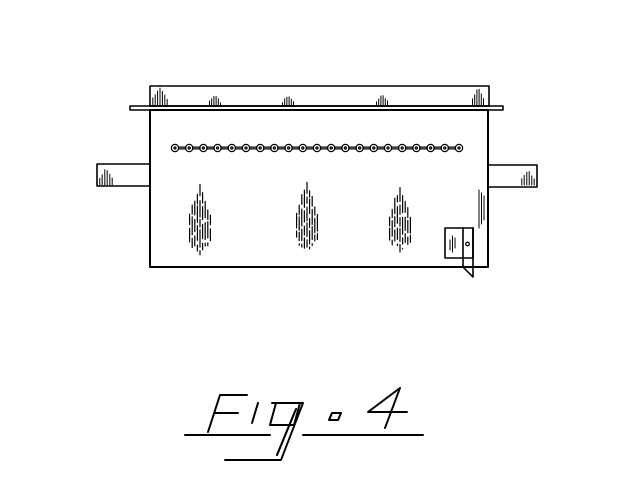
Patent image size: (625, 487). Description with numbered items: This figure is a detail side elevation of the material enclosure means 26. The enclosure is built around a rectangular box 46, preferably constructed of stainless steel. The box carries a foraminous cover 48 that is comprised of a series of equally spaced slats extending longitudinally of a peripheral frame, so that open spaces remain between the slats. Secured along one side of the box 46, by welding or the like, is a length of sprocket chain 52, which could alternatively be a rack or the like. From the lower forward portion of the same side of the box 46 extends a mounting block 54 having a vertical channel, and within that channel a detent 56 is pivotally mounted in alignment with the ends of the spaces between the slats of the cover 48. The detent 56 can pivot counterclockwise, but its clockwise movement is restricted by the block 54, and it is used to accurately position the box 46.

The material enclosure means 26 is at (143, 230).
The rectangular box 46 is at (262, 203).
The foraminous cover 48 is at (455, 86).
The sprocket chain 52 is at (170, 145).
The mounting block 54 is at (462, 230).
The detent 56 is at (468, 258).